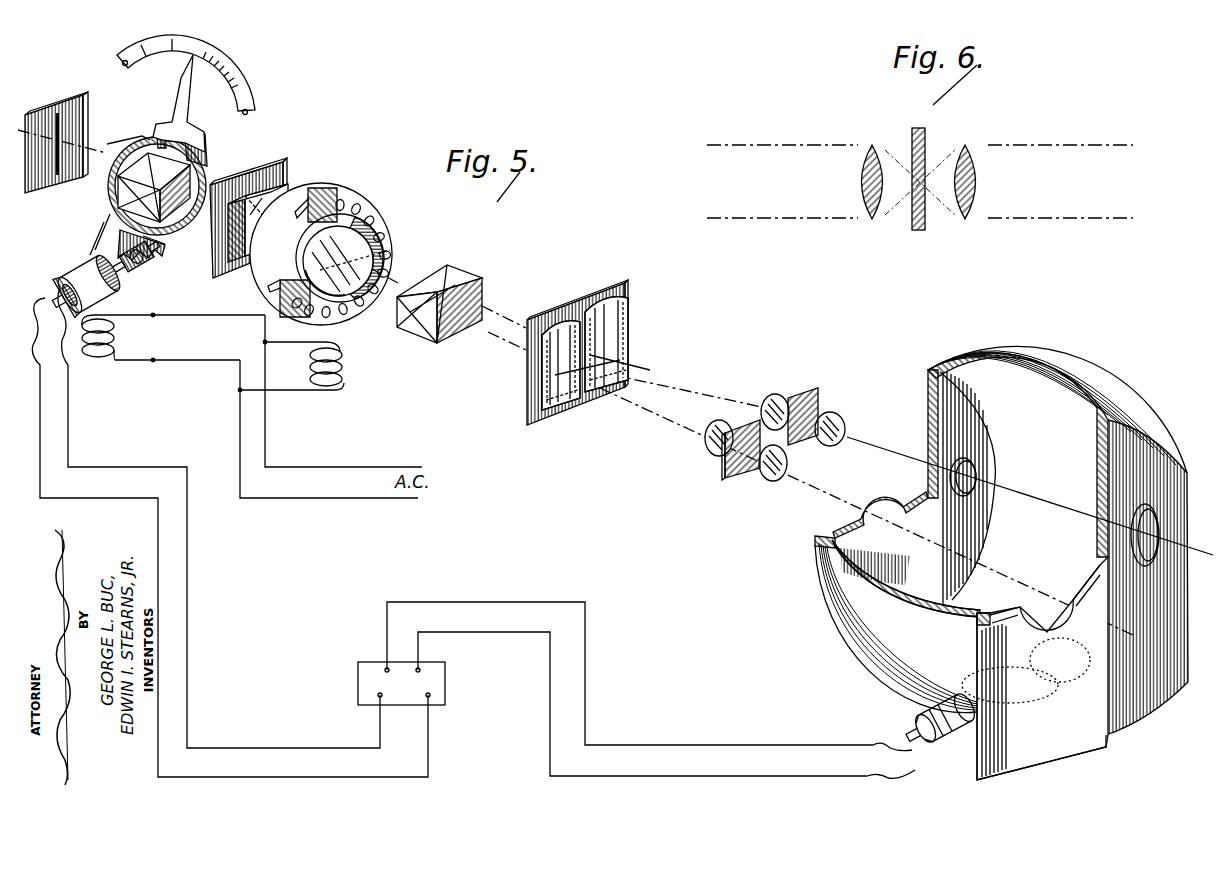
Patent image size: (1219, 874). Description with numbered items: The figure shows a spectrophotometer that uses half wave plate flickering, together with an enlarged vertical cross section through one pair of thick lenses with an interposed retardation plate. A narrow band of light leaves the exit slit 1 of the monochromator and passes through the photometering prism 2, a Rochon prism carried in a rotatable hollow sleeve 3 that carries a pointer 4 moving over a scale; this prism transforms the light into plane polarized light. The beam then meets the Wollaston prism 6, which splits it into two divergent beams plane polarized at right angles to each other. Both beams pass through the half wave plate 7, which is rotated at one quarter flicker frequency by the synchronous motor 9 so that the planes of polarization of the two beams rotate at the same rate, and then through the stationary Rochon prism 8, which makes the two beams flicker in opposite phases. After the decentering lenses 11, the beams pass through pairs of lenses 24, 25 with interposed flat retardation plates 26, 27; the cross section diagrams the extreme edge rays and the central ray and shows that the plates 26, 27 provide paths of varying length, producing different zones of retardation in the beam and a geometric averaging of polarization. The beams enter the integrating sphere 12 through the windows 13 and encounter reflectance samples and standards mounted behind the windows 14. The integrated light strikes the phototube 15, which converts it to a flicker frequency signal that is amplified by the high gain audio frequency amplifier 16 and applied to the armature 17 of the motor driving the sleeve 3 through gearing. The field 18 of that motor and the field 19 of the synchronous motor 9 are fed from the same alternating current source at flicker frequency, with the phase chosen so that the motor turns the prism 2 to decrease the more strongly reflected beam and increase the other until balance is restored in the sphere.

In FIG. 5, the exit slit 1 is at (62, 106).
In FIG. 5, the photometering prism 2 is at (182, 170).
In FIG. 5, the rotatable hollow sleeve 3 is at (190, 135).
In FIG. 5, the pointer 4 is at (172, 100).
In FIG. 5, the Wollaston prism 6 is at (270, 195).
In FIG. 5, the half wave plate 7 is at (355, 250).
In FIG. 5, the stationary Rochon prism 8 is at (462, 274).
In FIG. 5, the synchronous motor 9 is at (360, 196).
In FIG. 5, the decentering lenses 11 is at (628, 292).
In FIG. 5, the integrating sphere 12 is at (1075, 362).
In FIG. 5, the windows 13 is at (890, 514).
In FIG. 5, the windows 14 is at (1126, 516).
In FIG. 5, the phototube 15 is at (912, 712).
In FIG. 5, the high gain audio frequency amplifier 16 is at (360, 664).
In FIG. 5, the motor armature 17 is at (79, 275).
In FIG. 5, the motor field 18 is at (112, 362).
In FIG. 5, the motor field 19 is at (335, 385).
In FIG. 5, the lenses 24 is at (775, 395).
In FIG. 5, the lenses 25 is at (707, 450).
In FIG. 6, the lenses 25 is at (860, 208).
In FIG. 5, the flat retardation plate 26 is at (822, 392).
In FIG. 5, the flat retardation plate 27 is at (740, 478).
In FIG. 6, the flat retardation plate 27 is at (918, 232).